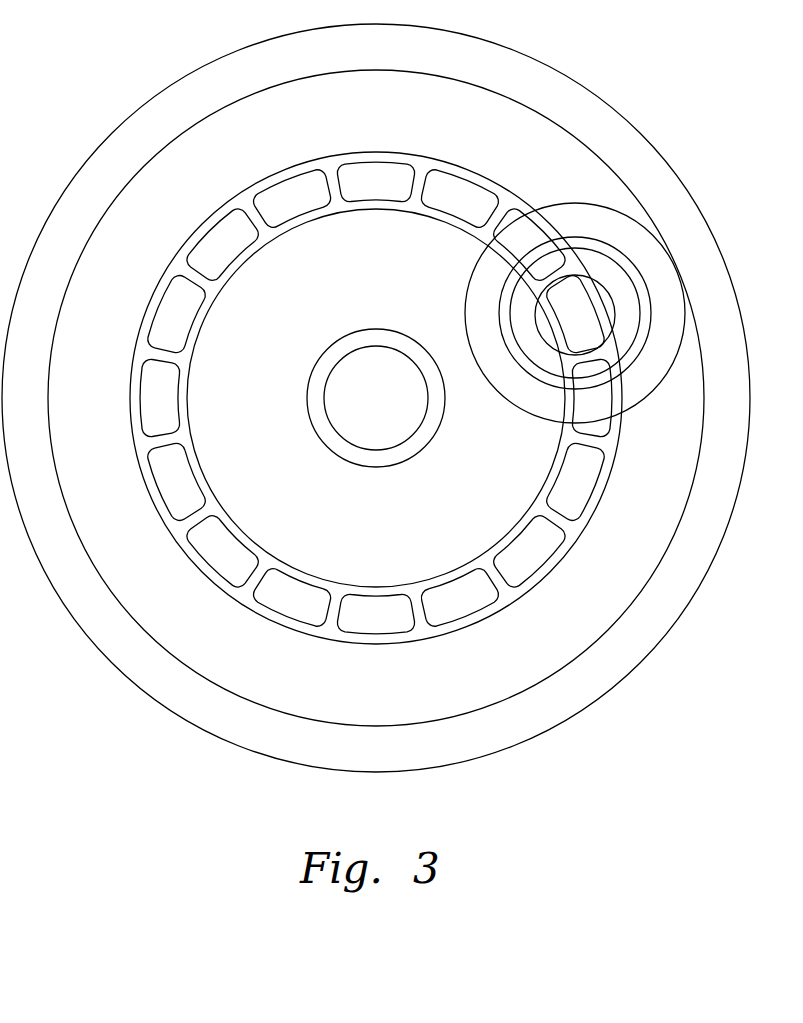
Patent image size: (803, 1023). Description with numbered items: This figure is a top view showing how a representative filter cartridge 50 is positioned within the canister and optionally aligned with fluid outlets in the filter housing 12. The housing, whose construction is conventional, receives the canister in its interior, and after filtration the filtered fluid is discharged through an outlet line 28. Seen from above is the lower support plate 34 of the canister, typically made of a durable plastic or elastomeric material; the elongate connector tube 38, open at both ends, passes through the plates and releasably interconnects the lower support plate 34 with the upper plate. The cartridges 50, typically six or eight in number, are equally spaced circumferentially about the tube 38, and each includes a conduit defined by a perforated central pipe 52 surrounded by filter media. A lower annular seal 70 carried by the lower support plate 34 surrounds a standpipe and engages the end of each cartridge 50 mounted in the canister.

The filter housing 12 is at (577, 717).
The outlet line 28 is at (287, 598).
The lower support plate 34 is at (547, 117).
The elongate connector tube 38 is at (343, 458).
The filter cartridge 50 is at (575, 205).
The central pipe 52 is at (613, 300).
The lower annular seal 70 is at (607, 248).